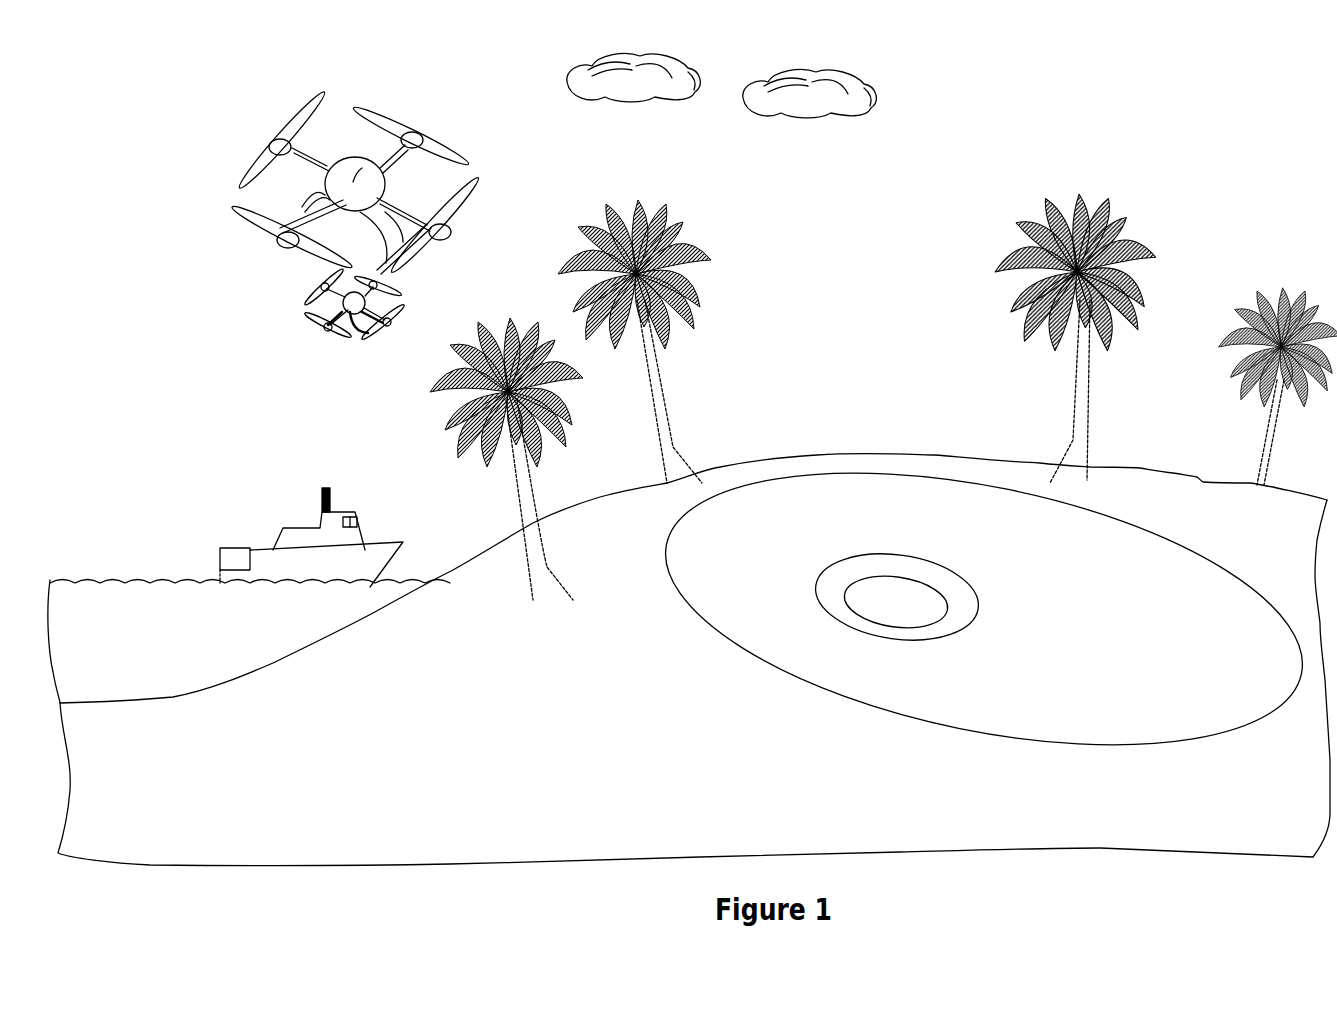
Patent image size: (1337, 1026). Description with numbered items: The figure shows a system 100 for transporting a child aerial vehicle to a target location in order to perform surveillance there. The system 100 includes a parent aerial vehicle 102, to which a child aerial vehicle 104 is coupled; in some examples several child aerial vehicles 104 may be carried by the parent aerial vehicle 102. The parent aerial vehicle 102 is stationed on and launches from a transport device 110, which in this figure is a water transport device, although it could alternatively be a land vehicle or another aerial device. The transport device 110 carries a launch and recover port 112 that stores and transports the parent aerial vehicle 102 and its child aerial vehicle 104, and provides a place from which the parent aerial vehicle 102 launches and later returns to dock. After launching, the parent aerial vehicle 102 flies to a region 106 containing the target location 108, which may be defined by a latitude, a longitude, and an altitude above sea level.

The system 100 is at (480, 88).
The parent aerial vehicle 102 is at (353, 182).
The child aerial vehicle 104 is at (312, 317).
The region 106 is at (800, 678).
The target location 108 is at (895, 640).
The transport device 110 is at (362, 535).
The launch and recover port 112 is at (225, 558).